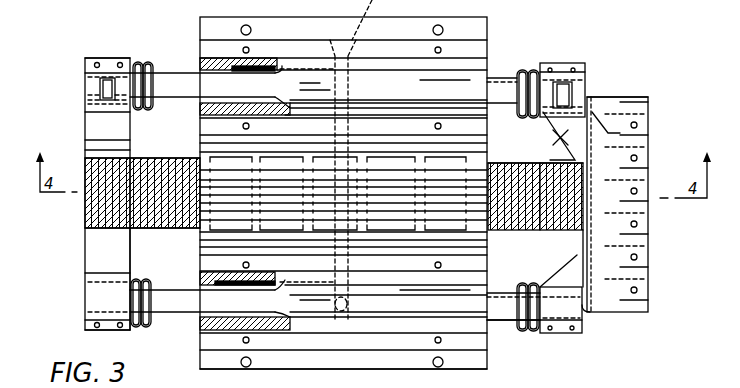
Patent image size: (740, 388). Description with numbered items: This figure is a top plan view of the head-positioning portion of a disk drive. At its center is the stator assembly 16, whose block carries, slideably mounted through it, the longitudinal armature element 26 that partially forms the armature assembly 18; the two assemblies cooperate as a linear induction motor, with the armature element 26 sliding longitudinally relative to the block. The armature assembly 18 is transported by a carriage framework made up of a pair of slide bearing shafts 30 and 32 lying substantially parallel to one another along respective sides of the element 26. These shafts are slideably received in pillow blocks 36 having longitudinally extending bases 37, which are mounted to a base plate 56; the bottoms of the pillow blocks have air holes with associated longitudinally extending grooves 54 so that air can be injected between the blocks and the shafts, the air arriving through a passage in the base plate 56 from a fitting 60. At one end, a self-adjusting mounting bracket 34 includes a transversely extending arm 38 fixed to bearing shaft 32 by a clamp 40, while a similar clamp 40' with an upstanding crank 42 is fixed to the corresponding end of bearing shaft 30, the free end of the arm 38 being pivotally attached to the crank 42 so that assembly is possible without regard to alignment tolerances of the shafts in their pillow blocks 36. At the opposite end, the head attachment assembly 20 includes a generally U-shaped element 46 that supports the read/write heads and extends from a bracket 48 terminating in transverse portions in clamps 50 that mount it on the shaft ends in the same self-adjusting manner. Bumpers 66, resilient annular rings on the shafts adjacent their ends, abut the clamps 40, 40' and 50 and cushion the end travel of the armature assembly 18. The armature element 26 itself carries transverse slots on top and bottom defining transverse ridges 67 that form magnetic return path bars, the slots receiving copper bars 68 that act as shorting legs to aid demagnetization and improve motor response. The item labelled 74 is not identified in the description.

The stator assembly 16 is at (196, 337).
The armature assembly 18 is at (165, 259).
The head attachment assembly 20 is at (610, 92).
The longitudinal armature element 26 is at (518, 230).
The slide bearing shaft 30 is at (175, 72).
The slide bearing shaft 32 is at (498, 350).
The self-adjusting mounting bracket 34 is at (78, 233).
The pillow block 36 is at (472, 60).
The base of pillow block 37 is at (200, 366).
The transversely extending arm 38 is at (85, 130).
The clamp 40 is at (85, 326).
The clamp 40' is at (107, 40).
The upstanding crank 42 is at (105, 90).
The U-shaped element 46 is at (645, 312).
The bracket 48 is at (553, 137).
The clamp 50 is at (594, 36).
The longitudinally extending groove 54 is at (200, 318).
The base plate 56 is at (200, 20).
The fitting 60 is at (351, 160).
The bumper 66 is at (136, 330).
The transverse ridge 67 is at (158, 158).
The copper bar 68 is at (180, 158).
The row 74 is at (343, 378).